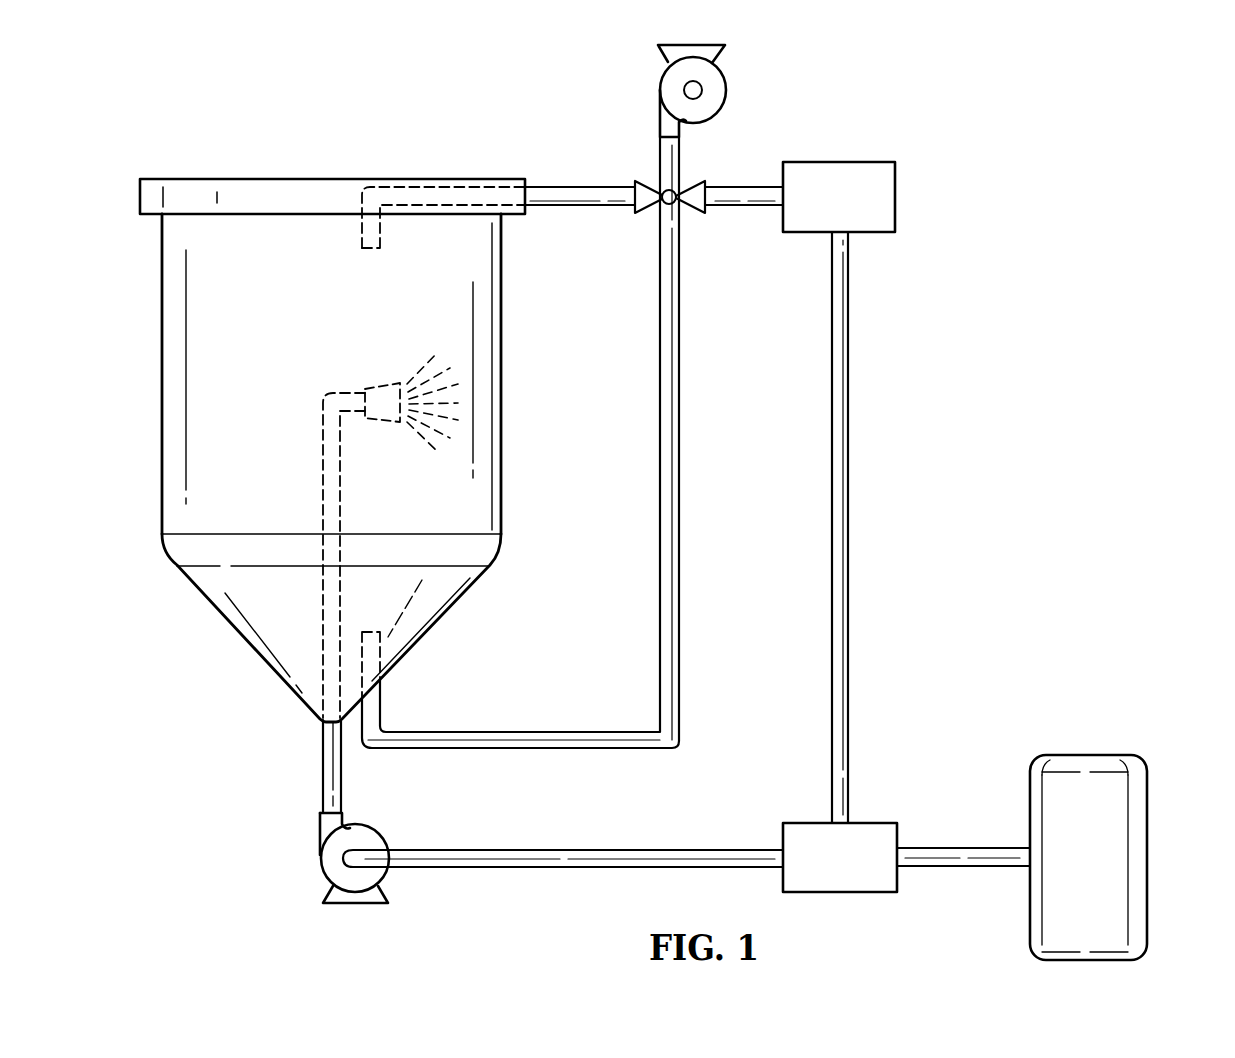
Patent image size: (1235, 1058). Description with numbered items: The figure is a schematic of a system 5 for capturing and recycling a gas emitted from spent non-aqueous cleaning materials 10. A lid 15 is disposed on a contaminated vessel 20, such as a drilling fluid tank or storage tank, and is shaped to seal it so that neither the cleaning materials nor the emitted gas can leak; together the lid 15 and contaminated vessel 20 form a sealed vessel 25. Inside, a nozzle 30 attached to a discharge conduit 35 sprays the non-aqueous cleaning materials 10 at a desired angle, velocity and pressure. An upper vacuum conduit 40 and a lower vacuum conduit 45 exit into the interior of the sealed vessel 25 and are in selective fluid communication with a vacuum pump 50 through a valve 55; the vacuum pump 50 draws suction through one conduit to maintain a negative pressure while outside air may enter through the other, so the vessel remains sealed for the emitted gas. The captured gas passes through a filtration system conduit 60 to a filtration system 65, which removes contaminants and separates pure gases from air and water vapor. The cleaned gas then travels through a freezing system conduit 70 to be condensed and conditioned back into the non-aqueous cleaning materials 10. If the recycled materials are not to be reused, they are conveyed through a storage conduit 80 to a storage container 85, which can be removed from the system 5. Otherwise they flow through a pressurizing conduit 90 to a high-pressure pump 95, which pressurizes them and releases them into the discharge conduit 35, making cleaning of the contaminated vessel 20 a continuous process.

The system 5 is at (138, 117).
The non-aqueous cleaning materials 10 is at (412, 328).
The lid 15 is at (330, 179).
The contaminated vessel 20 is at (162, 376).
The sealed vessel 25 is at (862, 892).
The nozzle 30 is at (383, 384).
The discharge conduit 35 is at (323, 470).
The upper vacuum conduit 40 is at (583, 187).
The lower vacuum conduit 45 is at (520, 750).
The vacuum pump 50 is at (727, 90).
The valve 55 is at (692, 213).
The filtration system conduit 60 is at (743, 187).
The filtration system 65 is at (860, 162).
The freezing system conduit 70 is at (849, 525).
The storage conduit 80 is at (963, 866).
The storage container 85 is at (1147, 886).
The pressurizing conduit 90 is at (568, 867).
The high-pressure pump 95 is at (355, 905).